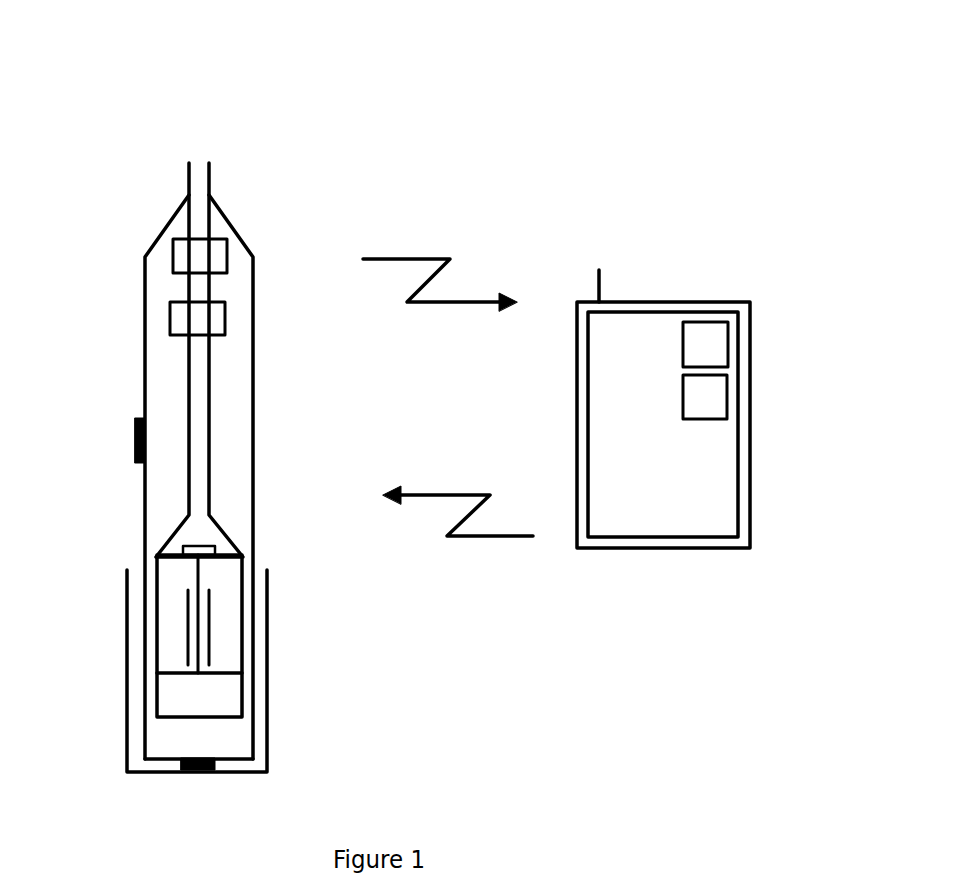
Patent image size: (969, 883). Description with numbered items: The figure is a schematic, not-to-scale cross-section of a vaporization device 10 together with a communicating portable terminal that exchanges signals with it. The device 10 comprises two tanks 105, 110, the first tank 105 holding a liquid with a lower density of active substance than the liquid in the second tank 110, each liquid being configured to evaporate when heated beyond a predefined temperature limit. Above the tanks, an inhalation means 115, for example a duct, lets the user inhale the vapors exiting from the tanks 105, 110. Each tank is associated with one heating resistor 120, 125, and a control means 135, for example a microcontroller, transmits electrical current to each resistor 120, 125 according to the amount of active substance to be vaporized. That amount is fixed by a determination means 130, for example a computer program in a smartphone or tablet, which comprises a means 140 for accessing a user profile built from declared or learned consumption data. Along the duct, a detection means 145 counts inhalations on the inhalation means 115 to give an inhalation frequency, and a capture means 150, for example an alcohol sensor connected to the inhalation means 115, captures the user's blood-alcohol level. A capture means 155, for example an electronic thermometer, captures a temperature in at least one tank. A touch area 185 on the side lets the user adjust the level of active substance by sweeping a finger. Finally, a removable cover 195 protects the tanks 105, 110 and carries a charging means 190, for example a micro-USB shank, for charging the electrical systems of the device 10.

The device 10 is at (407, 98).
The first tank 105 is at (220, 572).
The second tank 110 is at (177, 567).
The inhalation means 115 is at (202, 177).
The heating resistor 120 is at (212, 645).
The heating resistor 125 is at (187, 640).
The determination means 130 is at (720, 335).
The control means 135 is at (230, 698).
The user profile access means 140 is at (718, 387).
The inhalation frequency detection means 145 is at (203, 258).
The blood-alcohol level capture means 150 is at (202, 320).
The temperature capture means 155 is at (197, 552).
The touch area 185 is at (135, 430).
The charging means 190 is at (208, 772).
The removable cover 195 is at (270, 764).